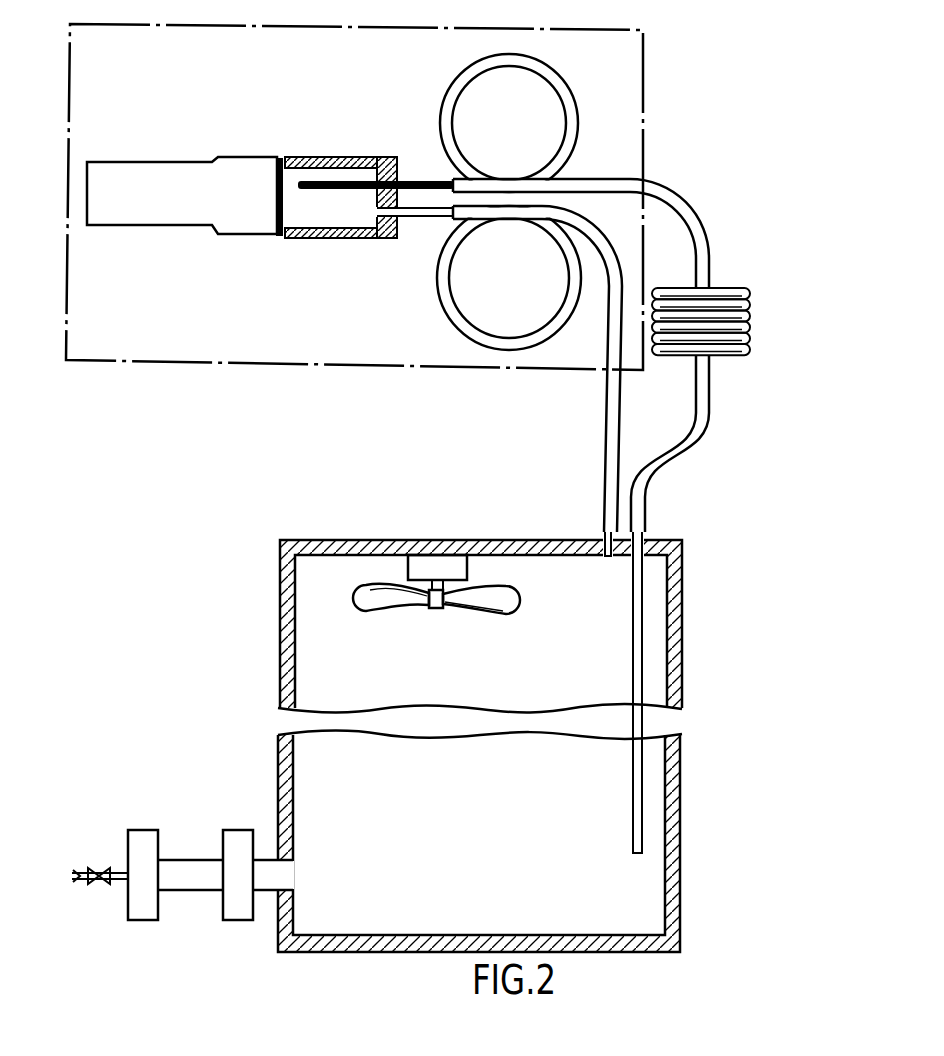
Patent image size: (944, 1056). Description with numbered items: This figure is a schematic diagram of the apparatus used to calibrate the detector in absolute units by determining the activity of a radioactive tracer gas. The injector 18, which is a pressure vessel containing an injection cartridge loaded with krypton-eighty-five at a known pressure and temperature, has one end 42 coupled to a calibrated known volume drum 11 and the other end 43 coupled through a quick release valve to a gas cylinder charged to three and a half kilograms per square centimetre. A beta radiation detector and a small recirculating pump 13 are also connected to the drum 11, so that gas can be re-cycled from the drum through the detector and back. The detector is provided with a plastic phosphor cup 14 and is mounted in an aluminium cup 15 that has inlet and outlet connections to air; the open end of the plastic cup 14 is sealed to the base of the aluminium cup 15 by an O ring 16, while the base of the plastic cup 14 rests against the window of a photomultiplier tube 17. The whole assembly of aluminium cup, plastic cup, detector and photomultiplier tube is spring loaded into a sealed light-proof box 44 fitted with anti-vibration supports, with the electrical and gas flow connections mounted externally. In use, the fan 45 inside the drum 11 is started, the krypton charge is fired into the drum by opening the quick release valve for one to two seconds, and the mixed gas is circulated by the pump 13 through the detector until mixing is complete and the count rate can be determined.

The known volume drum 11 is at (358, 950).
The recirculating pump 13 is at (734, 288).
The plastic phosphor cup 14 is at (279, 237).
The aluminium cup 15 is at (387, 239).
The O ring 16 is at (377, 163).
The photomultiplier tube 17 is at (244, 165).
The injector 18 is at (193, 892).
The one end 42 is at (274, 855).
The other end 43 is at (127, 872).
The sealed light-proof box 44 is at (523, 370).
The fan 45 is at (518, 597).